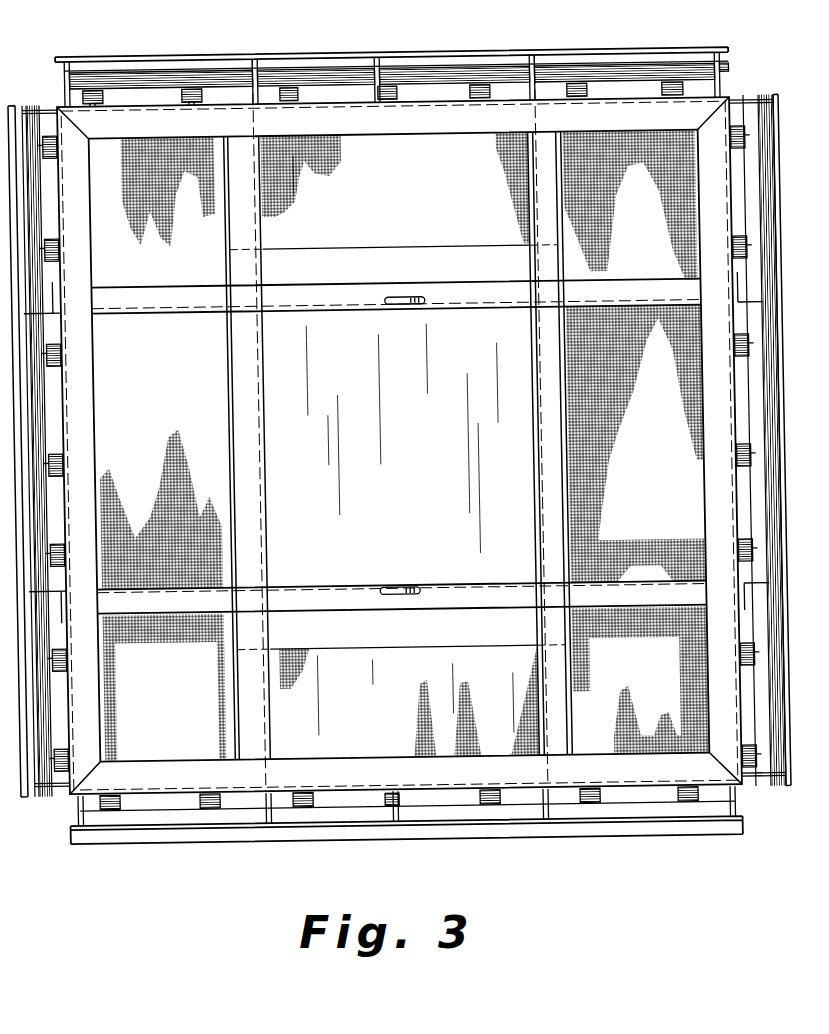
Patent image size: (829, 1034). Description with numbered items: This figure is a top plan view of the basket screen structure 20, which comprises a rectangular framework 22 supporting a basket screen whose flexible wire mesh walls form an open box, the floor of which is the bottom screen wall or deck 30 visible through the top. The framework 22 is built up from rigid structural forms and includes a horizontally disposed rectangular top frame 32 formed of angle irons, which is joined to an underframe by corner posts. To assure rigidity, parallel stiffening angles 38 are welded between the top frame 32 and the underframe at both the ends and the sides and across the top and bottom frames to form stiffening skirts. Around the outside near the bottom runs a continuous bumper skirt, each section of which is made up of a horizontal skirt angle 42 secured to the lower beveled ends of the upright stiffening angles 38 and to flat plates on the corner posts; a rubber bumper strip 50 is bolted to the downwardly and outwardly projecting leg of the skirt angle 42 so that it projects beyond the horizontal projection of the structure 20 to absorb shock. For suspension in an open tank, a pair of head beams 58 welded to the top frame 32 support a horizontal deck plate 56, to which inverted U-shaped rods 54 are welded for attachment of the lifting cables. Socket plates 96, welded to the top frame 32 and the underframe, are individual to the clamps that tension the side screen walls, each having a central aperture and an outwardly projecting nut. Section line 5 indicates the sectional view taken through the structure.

The section line 5- 5 is at (609, 40).
The basket screen structure 20 is at (615, 89).
The rectangular framework 22 is at (153, 85).
The bottom screen wall or deck 30 is at (456, 213).
The top frame 32 is at (616, 127).
The stiffening angles 38 is at (351, 108).
The horizontal skirt angle 42 is at (54, 88).
The rubber bumper strip 50 is at (55, 60).
The inverted U-shaped rods 54 is at (409, 304).
The horizontal deck plate 56 is at (390, 417).
The head beams 58 is at (163, 314).
The socket plates 96 is at (54, 148).